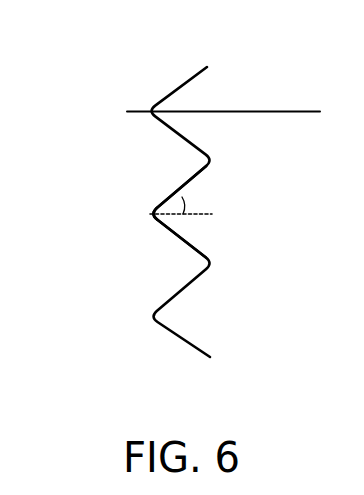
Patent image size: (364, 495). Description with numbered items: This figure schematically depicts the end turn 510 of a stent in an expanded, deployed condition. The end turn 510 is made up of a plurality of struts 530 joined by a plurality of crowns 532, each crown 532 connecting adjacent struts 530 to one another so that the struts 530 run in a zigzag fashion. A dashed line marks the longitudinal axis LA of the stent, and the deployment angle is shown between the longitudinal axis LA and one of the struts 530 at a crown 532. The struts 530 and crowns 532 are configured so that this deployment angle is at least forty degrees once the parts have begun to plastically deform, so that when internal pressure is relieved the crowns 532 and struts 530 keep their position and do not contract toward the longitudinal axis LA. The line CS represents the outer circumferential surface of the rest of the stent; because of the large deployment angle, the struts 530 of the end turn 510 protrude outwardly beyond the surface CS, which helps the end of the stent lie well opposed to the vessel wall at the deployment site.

The end turn 510 is at (116, 79).
The struts 530 is at (190, 177).
The crowns 532 is at (150, 216).
The outer circumferential surface CS is at (283, 111).
The longitudinal axis LA is at (207, 215).